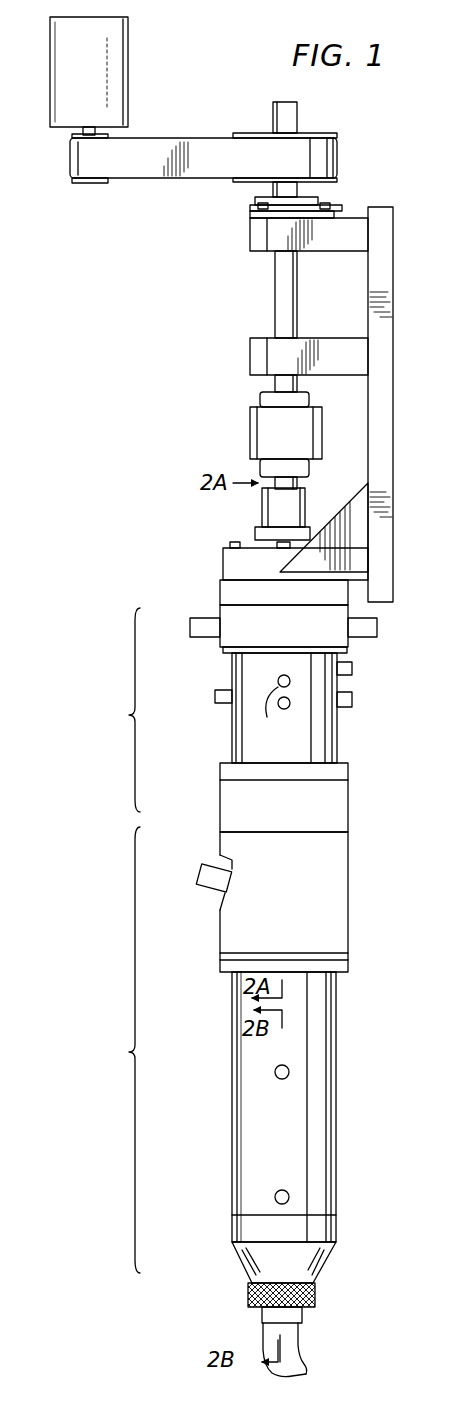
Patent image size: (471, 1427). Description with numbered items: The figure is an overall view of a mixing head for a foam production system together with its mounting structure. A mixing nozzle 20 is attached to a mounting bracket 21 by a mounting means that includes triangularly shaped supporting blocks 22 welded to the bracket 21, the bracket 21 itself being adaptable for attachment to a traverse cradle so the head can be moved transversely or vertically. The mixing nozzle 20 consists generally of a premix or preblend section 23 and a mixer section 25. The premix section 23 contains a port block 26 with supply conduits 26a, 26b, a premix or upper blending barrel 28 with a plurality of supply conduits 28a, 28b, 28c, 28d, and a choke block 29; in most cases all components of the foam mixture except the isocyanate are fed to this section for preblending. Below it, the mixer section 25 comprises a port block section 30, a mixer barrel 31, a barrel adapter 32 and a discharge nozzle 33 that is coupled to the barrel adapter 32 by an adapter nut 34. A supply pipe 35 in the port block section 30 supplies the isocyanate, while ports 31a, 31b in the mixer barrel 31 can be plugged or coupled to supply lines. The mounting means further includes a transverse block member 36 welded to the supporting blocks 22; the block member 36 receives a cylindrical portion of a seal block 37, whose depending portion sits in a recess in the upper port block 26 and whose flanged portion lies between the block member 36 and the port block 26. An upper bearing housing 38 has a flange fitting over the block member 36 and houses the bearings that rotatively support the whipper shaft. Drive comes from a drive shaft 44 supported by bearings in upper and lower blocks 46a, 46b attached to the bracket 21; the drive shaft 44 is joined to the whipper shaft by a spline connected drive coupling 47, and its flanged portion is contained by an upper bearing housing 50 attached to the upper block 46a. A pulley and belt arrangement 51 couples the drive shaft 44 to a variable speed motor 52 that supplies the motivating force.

The mixing nozzle 20 is at (293, 867).
The mounting bracket 21 is at (396, 410).
The triangularly shaped supporting blocks 22 is at (355, 522).
The premix section 23 is at (119, 715).
The mixer section 25 is at (119, 1052).
The port block 26 is at (325, 632).
The supply conduit 26a is at (200, 640).
The supply conduit 26b is at (377, 623).
The premix barrel 28 is at (340, 750).
The supply conduit 28a is at (352, 670).
The supply conduit 28b is at (273, 717).
The supply conduit 28c is at (352, 702).
The supply conduit 28d is at (290, 707).
The choke block 29 is at (350, 812).
The port block section 30 is at (350, 930).
The mixer barrel 31 is at (337, 1117).
The port 31a is at (289, 1072).
The port 31b is at (289, 1197).
The barrel adapter 32 is at (330, 1257).
The discharge nozzle 33 is at (298, 1345).
The adapter nut 34 is at (315, 1292).
The supply pipe 35 is at (208, 887).
The transverse block member 36 is at (222, 563).
The seal block 37 is at (220, 590).
The upper bearing housing 38 is at (262, 510).
The drive shaft 44 is at (273, 298).
The upper block 46a is at (248, 233).
The lower block 46b is at (250, 358).
The drive coupling 47 is at (250, 427).
The upper bearing housing 50 is at (318, 197).
The pulley and belt arrangement 51 is at (186, 132).
The variable speed motor 52 is at (128, 60).